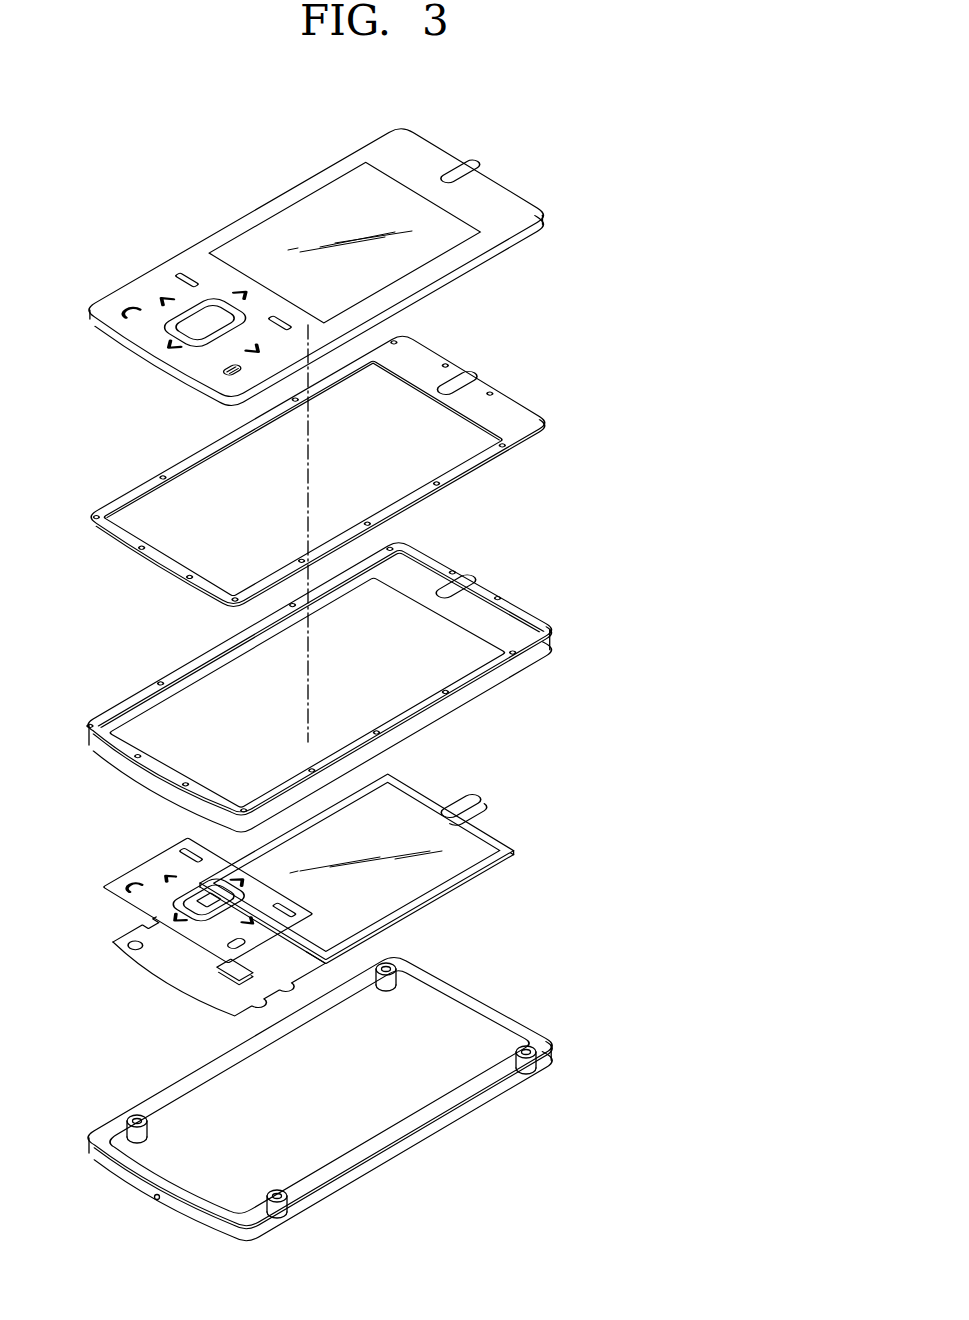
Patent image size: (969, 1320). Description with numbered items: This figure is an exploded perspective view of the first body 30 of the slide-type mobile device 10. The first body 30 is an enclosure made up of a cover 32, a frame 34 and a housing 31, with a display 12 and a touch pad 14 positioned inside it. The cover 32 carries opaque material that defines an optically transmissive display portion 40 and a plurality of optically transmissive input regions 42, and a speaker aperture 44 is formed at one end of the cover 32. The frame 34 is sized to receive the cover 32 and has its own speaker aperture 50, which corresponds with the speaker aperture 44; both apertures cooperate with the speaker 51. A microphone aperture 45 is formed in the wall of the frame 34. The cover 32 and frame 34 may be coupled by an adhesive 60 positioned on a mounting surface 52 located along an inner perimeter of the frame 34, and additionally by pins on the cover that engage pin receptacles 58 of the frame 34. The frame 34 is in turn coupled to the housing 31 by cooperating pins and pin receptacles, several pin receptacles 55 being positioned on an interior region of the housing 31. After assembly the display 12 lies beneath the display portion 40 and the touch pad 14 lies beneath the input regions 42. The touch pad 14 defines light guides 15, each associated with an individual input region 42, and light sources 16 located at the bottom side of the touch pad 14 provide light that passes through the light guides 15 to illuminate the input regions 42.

The slide-type mobile device 10 is at (624, 133).
The display 12 is at (480, 860).
The touch pad 14 is at (150, 873).
The light guides 15 is at (173, 917).
The light sources 16 is at (110, 897).
The first body 30 is at (600, 268).
The housing 31 is at (554, 973).
The cover 32 is at (382, 152).
The frame 34 is at (520, 663).
The display portion 40 is at (300, 212).
The input regions 42 is at (224, 368).
The speaker aperture 44 is at (470, 165).
The microphone aperture 45 is at (157, 1197).
The speaker aperture 50 is at (470, 597).
The speaker 51 is at (465, 806).
The mounting surface 52 is at (513, 620).
The pin receptacles 55 is at (398, 962).
The pin receptacles 58 is at (410, 543).
The adhesive 60 is at (512, 414).